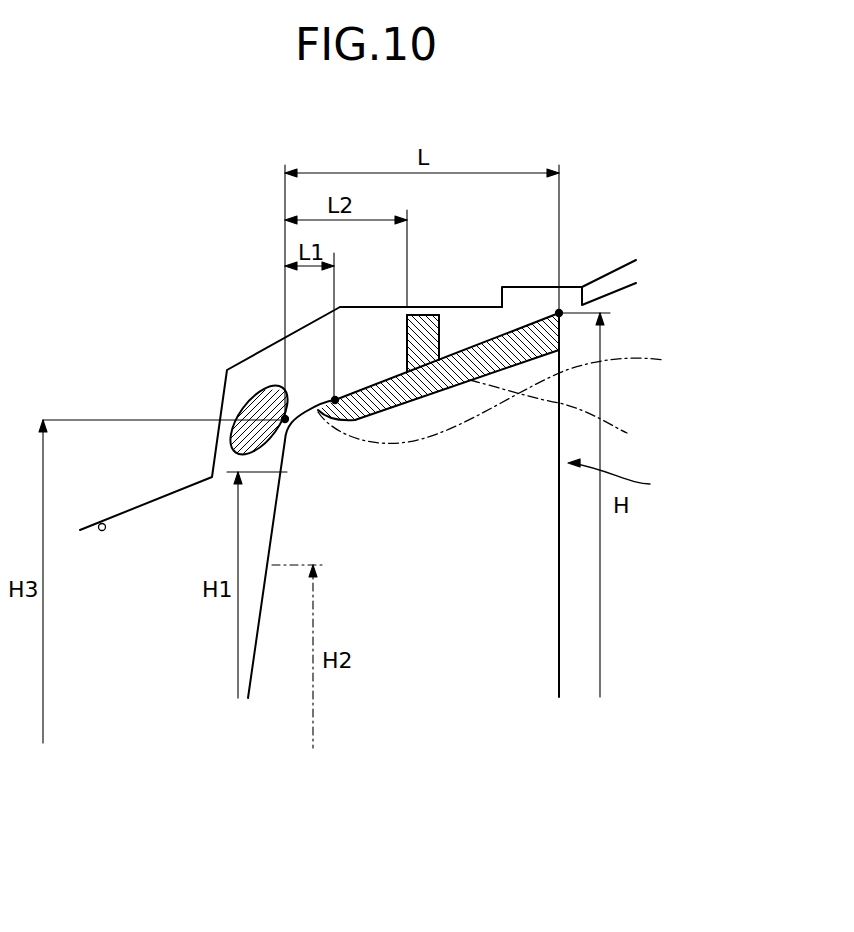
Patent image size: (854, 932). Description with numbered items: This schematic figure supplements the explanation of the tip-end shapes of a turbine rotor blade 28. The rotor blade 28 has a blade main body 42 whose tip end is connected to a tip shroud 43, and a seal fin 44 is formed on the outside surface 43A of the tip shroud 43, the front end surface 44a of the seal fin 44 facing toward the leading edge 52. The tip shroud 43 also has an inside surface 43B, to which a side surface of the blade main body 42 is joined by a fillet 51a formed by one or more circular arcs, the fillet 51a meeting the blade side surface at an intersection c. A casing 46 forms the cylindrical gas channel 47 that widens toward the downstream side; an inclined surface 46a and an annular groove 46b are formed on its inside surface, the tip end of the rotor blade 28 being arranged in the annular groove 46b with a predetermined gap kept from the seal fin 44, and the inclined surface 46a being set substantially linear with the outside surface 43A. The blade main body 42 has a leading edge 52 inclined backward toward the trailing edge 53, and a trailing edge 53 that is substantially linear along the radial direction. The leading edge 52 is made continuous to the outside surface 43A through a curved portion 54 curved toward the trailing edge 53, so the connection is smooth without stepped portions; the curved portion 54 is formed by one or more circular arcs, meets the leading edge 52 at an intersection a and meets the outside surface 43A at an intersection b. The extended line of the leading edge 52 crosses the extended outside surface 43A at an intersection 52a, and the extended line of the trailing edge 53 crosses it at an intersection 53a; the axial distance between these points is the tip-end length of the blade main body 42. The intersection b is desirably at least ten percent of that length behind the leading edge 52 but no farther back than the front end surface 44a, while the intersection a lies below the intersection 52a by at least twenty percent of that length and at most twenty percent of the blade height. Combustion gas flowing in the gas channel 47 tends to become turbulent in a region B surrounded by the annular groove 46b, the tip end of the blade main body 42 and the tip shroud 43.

The rotor blade 28 is at (624, 478).
The blade main body 42 is at (422, 667).
The tip shroud 43 is at (513, 328).
The outside surface of tip shroud 43A is at (470, 342).
The inside surface of tip shroud 43B is at (468, 380).
The seal fin 44 is at (425, 314).
The front end surface of seal fin 44a is at (389, 306).
The casing 46 is at (165, 397).
The inclined surface 46a is at (104, 524).
The annular groove 46b is at (376, 306).
The gas channel 47 is at (145, 629).
The fillet 51a is at (630, 434).
The leading edge 52 is at (256, 646).
The intersection 52a is at (267, 383).
The trailing edge 53 is at (560, 613).
The intersection 53a is at (636, 262).
The curved portion 54 is at (248, 402).
The intersection a is at (282, 472).
The intersection b is at (334, 400).
The intersection c is at (499, 397).
The region B is at (230, 427).